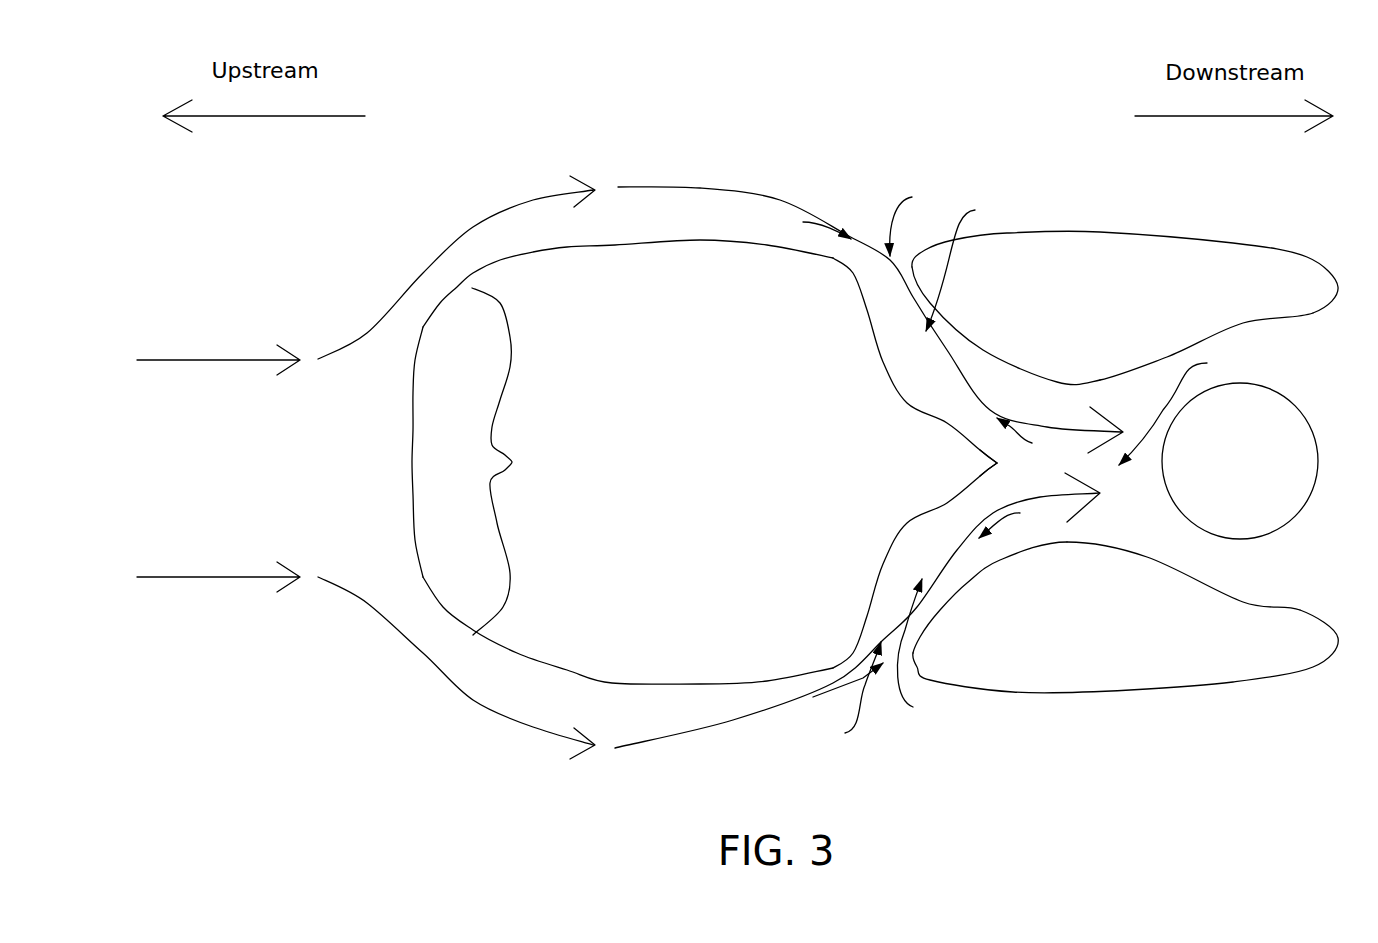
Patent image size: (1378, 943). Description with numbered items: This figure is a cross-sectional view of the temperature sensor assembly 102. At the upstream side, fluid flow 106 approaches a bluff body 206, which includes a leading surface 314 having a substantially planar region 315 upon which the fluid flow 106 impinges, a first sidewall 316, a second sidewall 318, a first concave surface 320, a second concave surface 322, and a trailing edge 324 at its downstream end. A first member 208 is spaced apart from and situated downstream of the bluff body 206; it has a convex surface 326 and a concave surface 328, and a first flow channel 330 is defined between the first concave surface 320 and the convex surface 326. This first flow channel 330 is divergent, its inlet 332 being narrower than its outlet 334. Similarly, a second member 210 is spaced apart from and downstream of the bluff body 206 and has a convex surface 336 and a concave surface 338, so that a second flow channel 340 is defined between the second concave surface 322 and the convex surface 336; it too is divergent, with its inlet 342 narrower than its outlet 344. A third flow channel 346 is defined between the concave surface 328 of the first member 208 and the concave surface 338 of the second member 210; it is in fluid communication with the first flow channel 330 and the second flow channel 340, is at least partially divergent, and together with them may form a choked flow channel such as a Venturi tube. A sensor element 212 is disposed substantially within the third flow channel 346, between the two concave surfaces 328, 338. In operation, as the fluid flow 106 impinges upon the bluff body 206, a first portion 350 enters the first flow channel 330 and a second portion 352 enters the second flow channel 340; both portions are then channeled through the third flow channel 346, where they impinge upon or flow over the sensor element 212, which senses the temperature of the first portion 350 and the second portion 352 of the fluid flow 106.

The temperature sensor assembly 102 is at (967, 76).
The fluid flow 106 is at (218, 468).
The bluff body 206 is at (641, 475).
The first member 208 is at (1125, 307).
The second member 210 is at (1126, 617).
The sensor element 212 is at (1221, 475).
The leading surface 314 is at (410, 462).
The substantially planar region 315 is at (513, 462).
The first sidewall 316 is at (613, 245).
The second sidewall 318 is at (612, 680).
The first concave surface 320 is at (882, 363).
The second concave surface 322 is at (888, 558).
The trailing edge 324 is at (990, 463).
The convex surface 326 is at (982, 352).
The concave surface 328 is at (1243, 323).
The first flow channel 330 is at (972, 265).
The inlet 332 is at (921, 221).
The outlet 334 is at (1036, 439).
The convex surface 336 is at (968, 585).
The concave surface 338 is at (1243, 602).
The second flow channel 340 is at (926, 651).
The inlet 342 is at (841, 695).
The outlet 344 is at (1021, 520).
The third flow channel 346 is at (1186, 408).
The first portion 350 is at (804, 224).
The second portion 352 is at (827, 686).